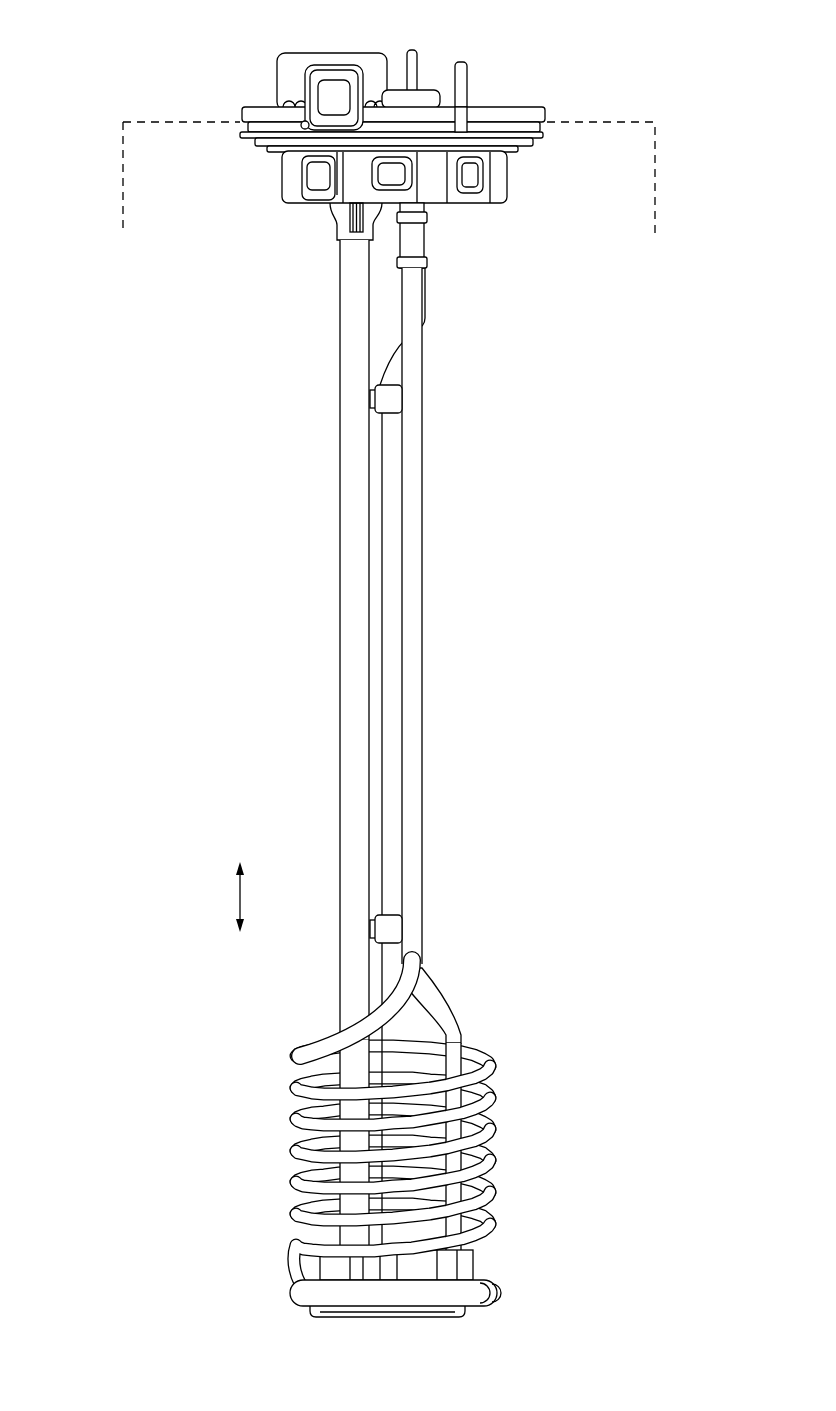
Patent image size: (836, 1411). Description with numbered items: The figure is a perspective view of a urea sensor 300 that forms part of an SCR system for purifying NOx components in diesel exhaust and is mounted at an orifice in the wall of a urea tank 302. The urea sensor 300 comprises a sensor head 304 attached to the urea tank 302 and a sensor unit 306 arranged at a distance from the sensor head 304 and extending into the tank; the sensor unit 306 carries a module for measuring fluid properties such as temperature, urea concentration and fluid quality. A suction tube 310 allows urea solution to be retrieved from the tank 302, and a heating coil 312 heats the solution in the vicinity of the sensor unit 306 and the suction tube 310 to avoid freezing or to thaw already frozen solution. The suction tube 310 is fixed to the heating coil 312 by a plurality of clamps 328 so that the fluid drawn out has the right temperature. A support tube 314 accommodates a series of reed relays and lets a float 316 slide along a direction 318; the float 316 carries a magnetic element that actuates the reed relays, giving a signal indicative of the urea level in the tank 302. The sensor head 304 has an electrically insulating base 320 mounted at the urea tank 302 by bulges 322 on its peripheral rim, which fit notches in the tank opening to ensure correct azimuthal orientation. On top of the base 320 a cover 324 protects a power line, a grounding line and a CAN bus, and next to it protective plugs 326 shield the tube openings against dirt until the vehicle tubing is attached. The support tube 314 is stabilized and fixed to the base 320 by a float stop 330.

The urea sensor 300 is at (137, 707).
The urea tank 302 is at (648, 122).
The sensor head 304 is at (258, 178).
The sensor unit 306 is at (430, 1270).
The suction tube 310 is at (440, 1003).
The heating coil 312 is at (415, 812).
The support tube 314 is at (343, 622).
The float 316 is at (325, 1228).
The direction 318 is at (240, 895).
The base 320 is at (497, 116).
The bulges 322 is at (547, 116).
The cover 324 is at (292, 75).
The protective plugs 326 is at (413, 52).
The clamps 328 is at (392, 400).
The float stop 330 is at (337, 225).